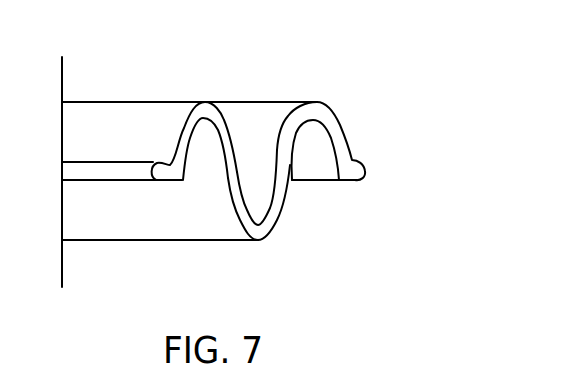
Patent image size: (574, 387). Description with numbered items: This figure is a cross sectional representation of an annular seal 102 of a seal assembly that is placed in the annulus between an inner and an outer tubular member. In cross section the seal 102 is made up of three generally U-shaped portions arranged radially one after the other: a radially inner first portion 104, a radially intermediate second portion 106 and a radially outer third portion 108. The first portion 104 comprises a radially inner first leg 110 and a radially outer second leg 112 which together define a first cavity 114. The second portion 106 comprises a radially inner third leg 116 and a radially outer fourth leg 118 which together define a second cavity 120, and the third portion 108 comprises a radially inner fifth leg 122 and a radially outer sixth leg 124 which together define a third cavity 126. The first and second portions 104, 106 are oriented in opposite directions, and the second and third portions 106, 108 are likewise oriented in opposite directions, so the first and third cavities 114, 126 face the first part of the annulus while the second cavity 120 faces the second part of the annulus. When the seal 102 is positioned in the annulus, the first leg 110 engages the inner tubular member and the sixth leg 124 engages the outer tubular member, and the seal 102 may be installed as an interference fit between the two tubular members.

The annular seal 102 is at (369, 76).
The first portion 104 is at (188, 116).
The second portion 106 is at (260, 221).
The third portion 108 is at (338, 106).
The first leg 110 is at (186, 125).
The second leg 112 is at (233, 117).
The first cavity 114 is at (204, 100).
The third leg 116 is at (235, 206).
The fourth leg 118 is at (264, 243).
The second cavity 120 is at (272, 194).
The fifth leg 122 is at (287, 120).
The sixth leg 124 is at (339, 122).
The third cavity 126 is at (330, 163).